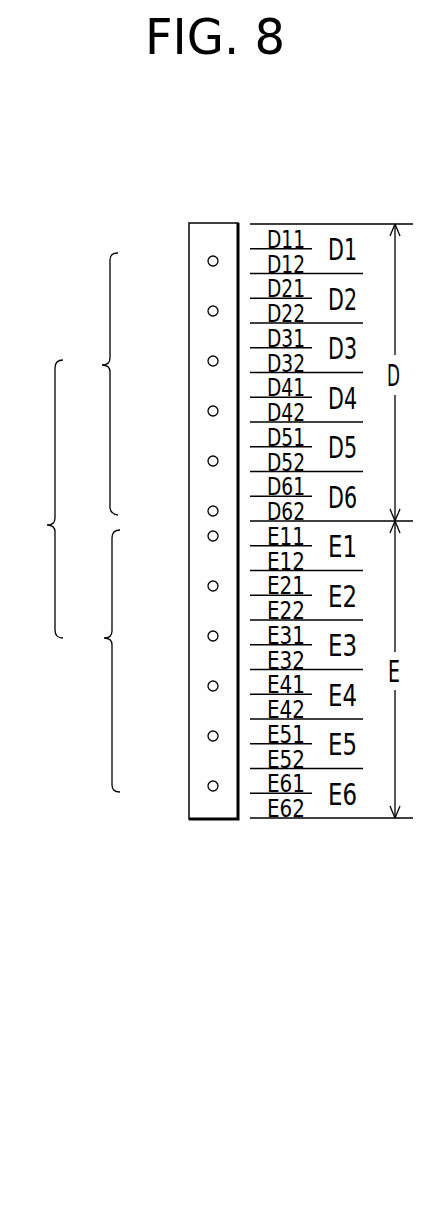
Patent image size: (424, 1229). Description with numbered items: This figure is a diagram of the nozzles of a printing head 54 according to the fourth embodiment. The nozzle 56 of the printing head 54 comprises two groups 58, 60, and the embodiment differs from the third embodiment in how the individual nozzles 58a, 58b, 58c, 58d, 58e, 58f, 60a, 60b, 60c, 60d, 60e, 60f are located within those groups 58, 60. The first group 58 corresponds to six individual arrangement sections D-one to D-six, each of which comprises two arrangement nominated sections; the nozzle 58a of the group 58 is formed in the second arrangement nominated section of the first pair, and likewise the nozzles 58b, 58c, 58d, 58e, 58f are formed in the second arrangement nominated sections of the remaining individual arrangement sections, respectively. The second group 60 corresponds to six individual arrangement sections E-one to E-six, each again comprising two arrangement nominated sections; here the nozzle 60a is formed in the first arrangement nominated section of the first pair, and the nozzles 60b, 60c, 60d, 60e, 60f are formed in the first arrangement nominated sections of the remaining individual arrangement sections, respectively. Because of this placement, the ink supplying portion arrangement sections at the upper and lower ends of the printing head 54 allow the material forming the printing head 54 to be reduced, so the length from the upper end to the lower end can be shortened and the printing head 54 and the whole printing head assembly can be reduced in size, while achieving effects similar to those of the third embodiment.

The printing head 54 is at (218, 199).
The nozzle 56 is at (40, 499).
The first group 58 is at (95, 384).
The nozzle 58a is at (208, 261).
The nozzle 58b is at (208, 311).
The nozzle 58c is at (208, 361).
The nozzle 58d is at (208, 411).
The nozzle 58e is at (208, 461).
The nozzle 58f is at (208, 511).
The second group 60 is at (97, 661).
The nozzle 60a is at (208, 536).
The nozzle 60b is at (208, 586).
The nozzle 60c is at (208, 636).
The nozzle 60d is at (208, 686).
The nozzle 60e is at (208, 736).
The nozzle 60f is at (208, 786).